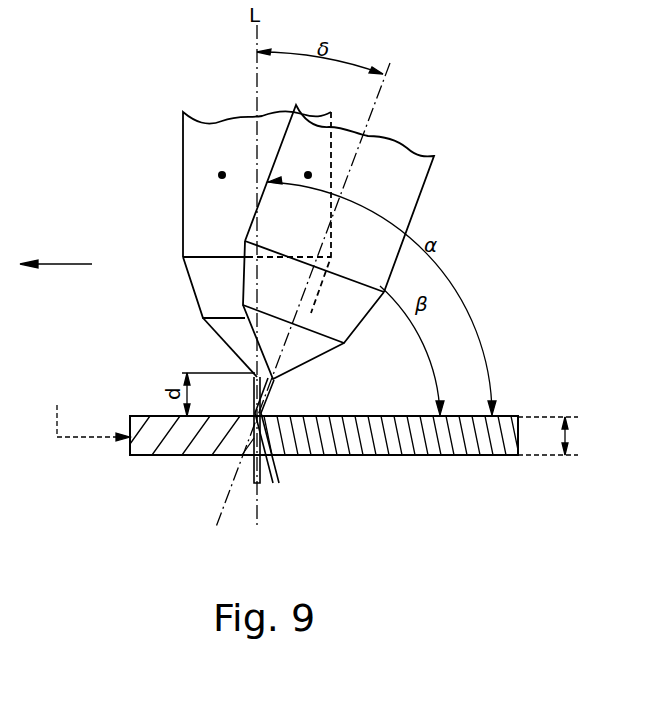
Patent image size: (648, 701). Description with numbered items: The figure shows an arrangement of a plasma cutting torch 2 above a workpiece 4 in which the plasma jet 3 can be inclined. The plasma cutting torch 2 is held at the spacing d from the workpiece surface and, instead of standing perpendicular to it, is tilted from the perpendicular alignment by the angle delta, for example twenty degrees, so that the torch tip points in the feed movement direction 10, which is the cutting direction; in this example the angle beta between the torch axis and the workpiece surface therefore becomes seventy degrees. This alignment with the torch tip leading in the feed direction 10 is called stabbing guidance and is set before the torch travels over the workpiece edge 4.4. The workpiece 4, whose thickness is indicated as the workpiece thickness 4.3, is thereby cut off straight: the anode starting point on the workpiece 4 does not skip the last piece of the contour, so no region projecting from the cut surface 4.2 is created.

The plasma cutting torch 2 is at (222, 175).
The plasma jet 3 is at (253, 389).
The workpiece 4 is at (182, 437).
The cut surface 4.2 is at (392, 436).
The workpiece thickness 4.3 is at (566, 436).
The workpiece edge 4.4 is at (90, 409).
The feed movement direction of the plasma cutting torch, cutting direction 10 is at (56, 246).